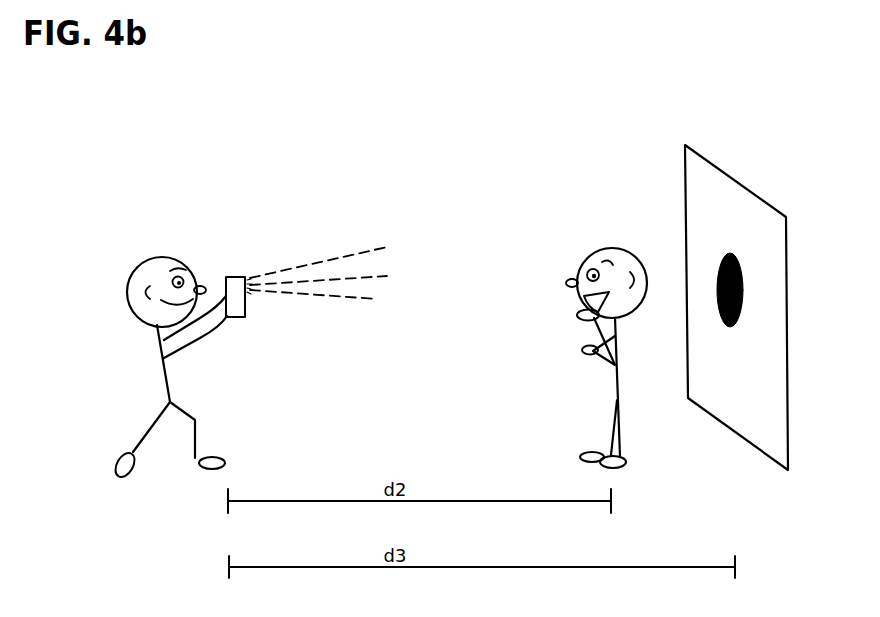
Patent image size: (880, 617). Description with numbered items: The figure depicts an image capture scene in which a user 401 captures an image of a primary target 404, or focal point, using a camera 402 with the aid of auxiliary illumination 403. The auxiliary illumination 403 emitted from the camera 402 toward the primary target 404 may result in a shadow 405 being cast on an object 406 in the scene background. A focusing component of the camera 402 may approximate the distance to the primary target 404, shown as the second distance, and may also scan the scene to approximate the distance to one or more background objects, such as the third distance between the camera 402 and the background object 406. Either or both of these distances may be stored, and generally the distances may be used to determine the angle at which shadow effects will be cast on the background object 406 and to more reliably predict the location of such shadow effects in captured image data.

The user 401 is at (115, 463).
The camera 402 is at (237, 268).
The auxiliary illumination 403 is at (341, 248).
The primary target 404 is at (622, 243).
The shadow 405 is at (742, 292).
The background object 406 is at (745, 185).